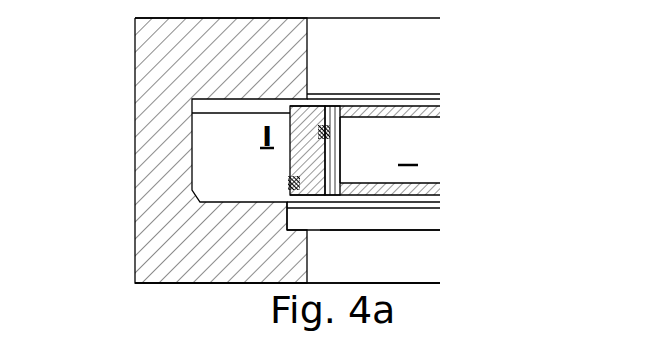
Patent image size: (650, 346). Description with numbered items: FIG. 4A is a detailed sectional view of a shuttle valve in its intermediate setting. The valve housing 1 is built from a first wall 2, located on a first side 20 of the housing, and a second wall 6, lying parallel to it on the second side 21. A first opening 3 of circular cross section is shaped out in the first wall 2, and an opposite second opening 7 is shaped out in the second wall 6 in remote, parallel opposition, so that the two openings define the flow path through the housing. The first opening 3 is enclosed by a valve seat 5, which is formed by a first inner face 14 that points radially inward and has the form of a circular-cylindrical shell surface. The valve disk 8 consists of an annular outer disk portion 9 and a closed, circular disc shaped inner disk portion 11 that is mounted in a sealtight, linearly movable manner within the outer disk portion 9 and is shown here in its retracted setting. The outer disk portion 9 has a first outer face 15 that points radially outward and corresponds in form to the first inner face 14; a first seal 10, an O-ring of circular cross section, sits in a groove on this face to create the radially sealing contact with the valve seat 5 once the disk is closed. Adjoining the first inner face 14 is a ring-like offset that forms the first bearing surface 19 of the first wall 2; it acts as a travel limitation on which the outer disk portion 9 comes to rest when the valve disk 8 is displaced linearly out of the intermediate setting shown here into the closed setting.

The valve housing 1 is at (130, 27).
The first wall 2 is at (250, 255).
The first opening 3 is at (427, 262).
The valve seat 5 is at (285, 228).
The second wall 6 is at (248, 65).
The second opening 7 is at (428, 62).
The valve disk 8 is at (457, 152).
The outer disk portion 9 is at (327, 153).
The first seal 10 is at (297, 180).
The inner disk portion 11 is at (440, 110).
The first inner face 14 is at (315, 218).
The first outer face 15 is at (315, 170).
The first bearing surface 19 is at (322, 229).
The first side 20 is at (363, 256).
The second side 21 is at (373, 63).